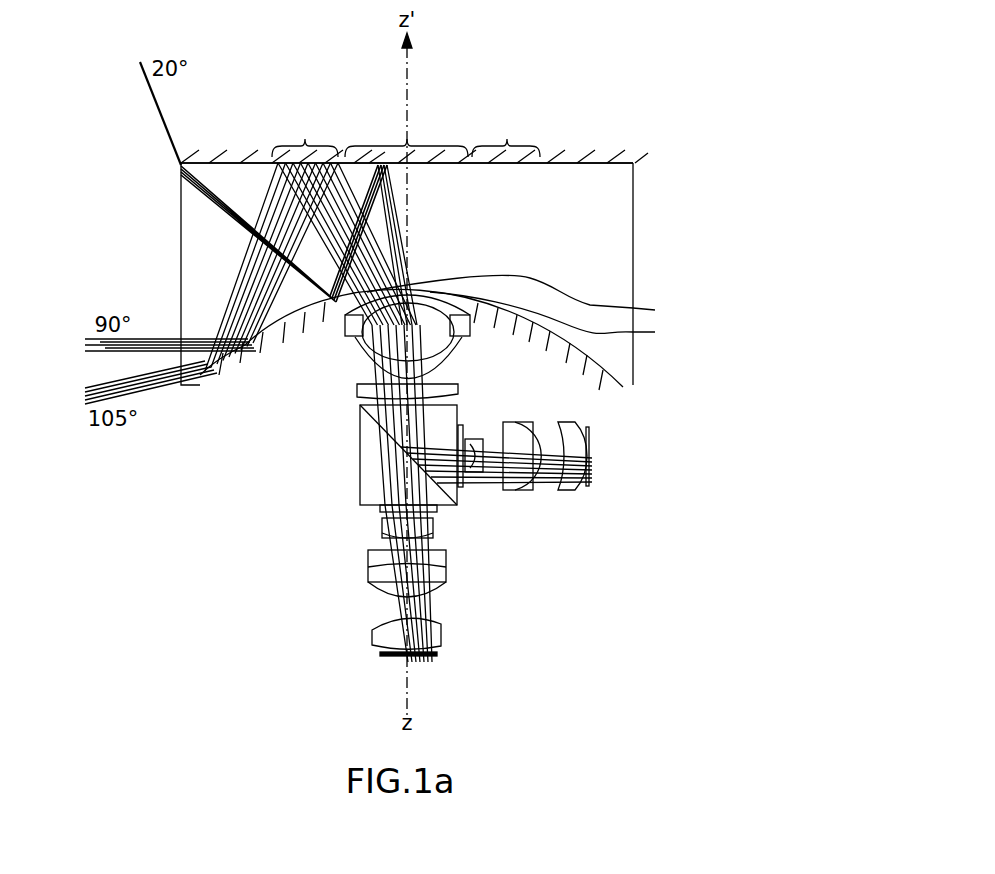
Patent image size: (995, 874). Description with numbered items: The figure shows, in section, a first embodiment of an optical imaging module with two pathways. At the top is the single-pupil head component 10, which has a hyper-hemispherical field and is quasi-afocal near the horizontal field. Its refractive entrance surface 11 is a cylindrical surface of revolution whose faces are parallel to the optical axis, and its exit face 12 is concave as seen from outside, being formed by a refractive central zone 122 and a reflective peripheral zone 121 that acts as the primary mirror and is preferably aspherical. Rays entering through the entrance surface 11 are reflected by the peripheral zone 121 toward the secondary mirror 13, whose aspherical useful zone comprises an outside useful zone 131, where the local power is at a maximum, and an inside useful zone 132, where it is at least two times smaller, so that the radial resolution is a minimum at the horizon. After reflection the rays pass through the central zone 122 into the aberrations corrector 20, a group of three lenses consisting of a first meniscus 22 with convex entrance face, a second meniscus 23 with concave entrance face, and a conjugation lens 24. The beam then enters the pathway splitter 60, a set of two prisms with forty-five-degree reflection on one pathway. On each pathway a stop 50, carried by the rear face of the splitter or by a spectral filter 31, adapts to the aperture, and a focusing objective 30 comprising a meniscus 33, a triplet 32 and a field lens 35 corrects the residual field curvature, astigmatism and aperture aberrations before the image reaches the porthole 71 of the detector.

The single-pupil head component 10 is at (666, 266).
The refractive entrance surface 11 is at (181, 243).
The exit face 12 is at (471, 342).
The secondary mirror 13 is at (575, 163).
The aberrations corrector 20 is at (450, 350).
The first meniscus 22 is at (470, 306).
The second meniscus 23 is at (458, 345).
The conjugation lens 24 is at (432, 394).
The focusing objective 30 is at (392, 595).
The spectral filter 31 is at (463, 430).
The triplet 32 is at (368, 570).
The meniscus 33 is at (383, 530).
The field lens 35 is at (373, 638).
The aperture diaphragm 50 is at (426, 506).
The pathway splitter 60 is at (348, 405).
The porthole of the detector 71 is at (437, 655).
The reflective peripheral zone 121 is at (270, 330).
The refractive central zone 122 is at (705, 345).
The outside useful zone 131 is at (406, 128).
The inside useful zone 132 is at (406, 128).